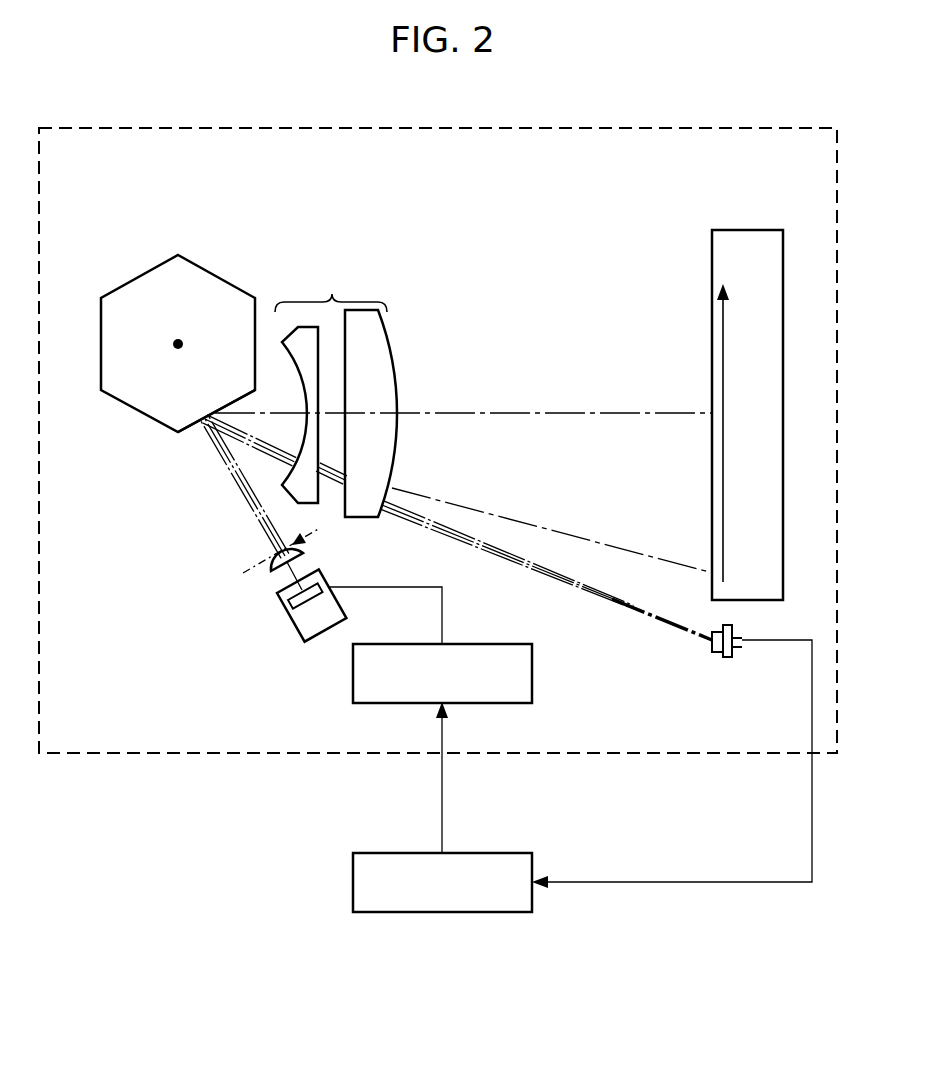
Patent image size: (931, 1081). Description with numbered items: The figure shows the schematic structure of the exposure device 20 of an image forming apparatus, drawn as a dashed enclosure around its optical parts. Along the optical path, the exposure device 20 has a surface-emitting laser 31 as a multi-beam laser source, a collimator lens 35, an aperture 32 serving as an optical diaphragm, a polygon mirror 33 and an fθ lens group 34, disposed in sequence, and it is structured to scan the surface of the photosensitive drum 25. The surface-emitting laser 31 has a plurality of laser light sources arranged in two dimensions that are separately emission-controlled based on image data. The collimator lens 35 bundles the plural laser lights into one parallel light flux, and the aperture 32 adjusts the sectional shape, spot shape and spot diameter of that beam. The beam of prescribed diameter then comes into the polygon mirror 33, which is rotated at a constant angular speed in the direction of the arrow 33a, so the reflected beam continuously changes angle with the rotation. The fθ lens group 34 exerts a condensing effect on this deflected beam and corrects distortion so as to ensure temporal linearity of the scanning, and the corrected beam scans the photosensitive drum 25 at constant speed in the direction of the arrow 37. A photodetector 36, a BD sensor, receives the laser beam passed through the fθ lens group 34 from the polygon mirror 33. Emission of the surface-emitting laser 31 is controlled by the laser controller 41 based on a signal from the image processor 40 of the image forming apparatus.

The exposure device 20 is at (747, 128).
The photosensitive drum 25 is at (742, 230).
The surface-emitting laser 31 is at (308, 598).
The aperture 32 is at (320, 528).
The polygon mirror 33 is at (208, 269).
The arrow 33a is at (215, 350).
The fθ lens group 34 is at (332, 294).
The collimator lens 35 is at (258, 564).
The photodetector 36 is at (727, 658).
The arrow 37 is at (724, 388).
The image processor 40 is at (532, 897).
The laser controller 41 is at (533, 670).